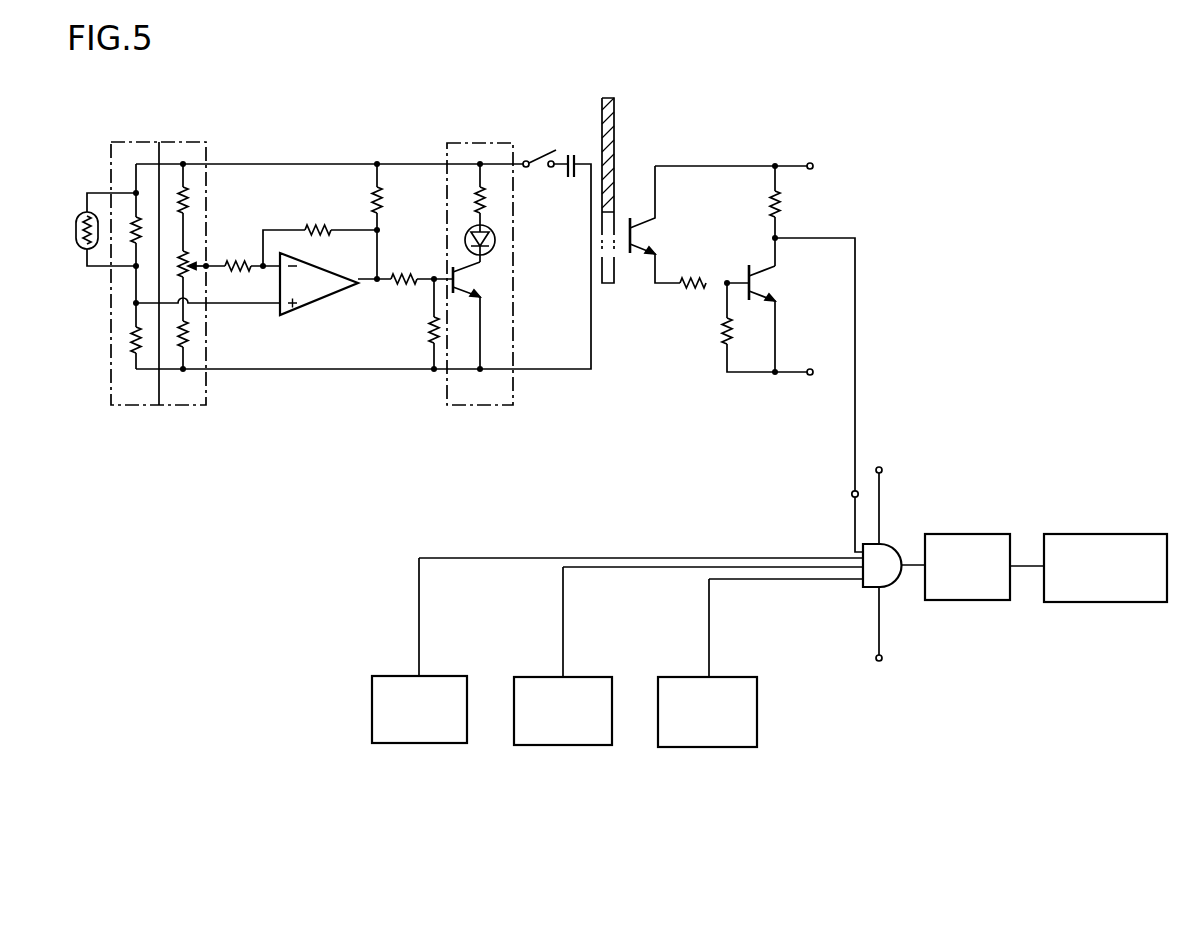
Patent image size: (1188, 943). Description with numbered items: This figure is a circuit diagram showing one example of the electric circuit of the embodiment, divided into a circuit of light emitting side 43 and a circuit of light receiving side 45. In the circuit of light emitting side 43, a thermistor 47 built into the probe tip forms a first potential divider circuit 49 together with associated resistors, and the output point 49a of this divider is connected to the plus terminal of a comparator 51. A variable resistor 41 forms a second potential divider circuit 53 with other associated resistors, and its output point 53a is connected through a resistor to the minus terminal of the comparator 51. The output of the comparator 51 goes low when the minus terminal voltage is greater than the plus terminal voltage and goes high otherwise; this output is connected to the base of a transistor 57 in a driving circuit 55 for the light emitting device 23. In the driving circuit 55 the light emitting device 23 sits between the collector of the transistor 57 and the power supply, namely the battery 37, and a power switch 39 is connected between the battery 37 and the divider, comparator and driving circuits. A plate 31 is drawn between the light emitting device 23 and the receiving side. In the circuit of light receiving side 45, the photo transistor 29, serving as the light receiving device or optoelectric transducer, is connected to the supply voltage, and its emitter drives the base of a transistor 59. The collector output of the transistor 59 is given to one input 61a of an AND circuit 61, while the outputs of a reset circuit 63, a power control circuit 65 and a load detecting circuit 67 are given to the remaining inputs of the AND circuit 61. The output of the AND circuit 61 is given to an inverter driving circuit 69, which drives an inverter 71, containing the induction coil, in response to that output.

The light emitting device 23 is at (494, 236).
The photo transistor 29 is at (627, 256).
The shutter plate 31 is at (615, 110).
The battery 37 is at (583, 150).
The power switch 39 is at (539, 157).
The variable resistor 41 is at (191, 263).
The circuit of light emitting side 43 is at (363, 250).
The circuit of light receiving side 45 is at (641, 408).
The thermistor 47 is at (76, 245).
The first potential divider circuit 49 is at (137, 141).
The output point 49a is at (136, 304).
The comparator 51 is at (322, 292).
The second potential divider circuit 53 is at (184, 141).
The output point 53a is at (209, 269).
The driving circuit 55 is at (468, 141).
The transistor 57 is at (466, 284).
The transistor 59 is at (748, 274).
The AND circuit 61 is at (888, 555).
The input 61a is at (852, 496).
The reset circuit 63 is at (448, 680).
The power control circuit 65 is at (592, 683).
The load detecting circuit 67 is at (738, 680).
The inverter driving circuit 69 is at (982, 535).
The inverter 71 is at (1113, 538).